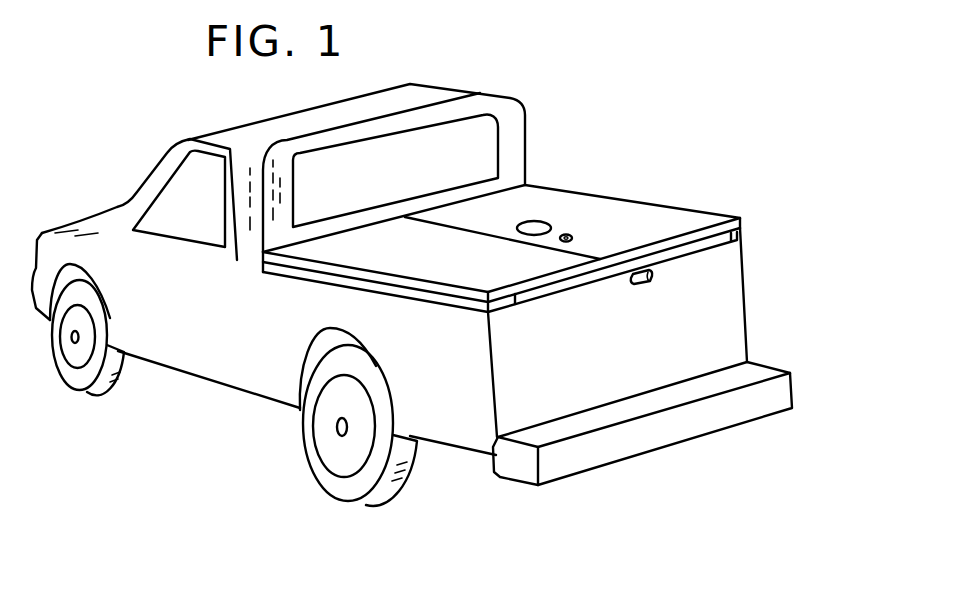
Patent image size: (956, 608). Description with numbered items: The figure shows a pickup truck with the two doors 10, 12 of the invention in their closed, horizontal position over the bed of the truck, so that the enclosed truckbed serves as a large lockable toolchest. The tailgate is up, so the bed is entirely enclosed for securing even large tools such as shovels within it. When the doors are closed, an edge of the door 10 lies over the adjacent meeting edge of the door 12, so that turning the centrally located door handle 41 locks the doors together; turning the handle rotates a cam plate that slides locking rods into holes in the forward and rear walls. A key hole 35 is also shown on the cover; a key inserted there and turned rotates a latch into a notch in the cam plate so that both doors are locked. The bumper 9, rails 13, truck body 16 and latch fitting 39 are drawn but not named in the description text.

The rear bumper 9 is at (612, 392).
The door 10 is at (580, 212).
The door 12 is at (330, 260).
The side rail 13 is at (425, 302).
The pickup truck 16 is at (272, 372).
The key hole 35 is at (572, 232).
The latch handle 39 is at (633, 283).
The door handle 41 is at (538, 210).